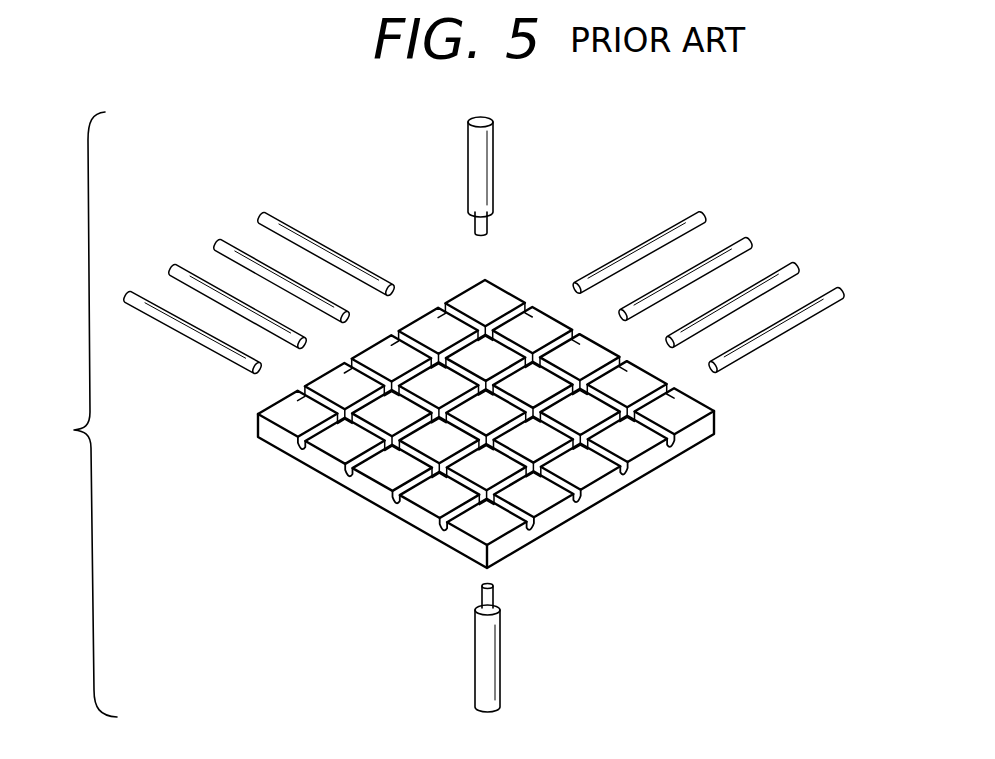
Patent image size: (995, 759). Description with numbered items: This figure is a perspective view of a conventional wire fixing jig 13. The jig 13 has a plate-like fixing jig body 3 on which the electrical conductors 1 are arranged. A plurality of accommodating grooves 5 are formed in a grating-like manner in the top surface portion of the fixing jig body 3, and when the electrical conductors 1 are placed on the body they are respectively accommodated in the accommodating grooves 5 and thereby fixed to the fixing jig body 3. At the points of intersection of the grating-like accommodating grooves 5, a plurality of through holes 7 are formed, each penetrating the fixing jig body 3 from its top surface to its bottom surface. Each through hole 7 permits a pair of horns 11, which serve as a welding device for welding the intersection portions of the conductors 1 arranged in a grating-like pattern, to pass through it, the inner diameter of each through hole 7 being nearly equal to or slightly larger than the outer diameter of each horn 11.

The electrical conductor 1 is at (278, 224).
The fixing jig body 3 is at (276, 455).
The accommodating groove 5 is at (425, 320).
The through hole 7 is at (343, 404).
The horn 11 is at (486, 147).
The wire fixing jig 13 is at (524, 405).